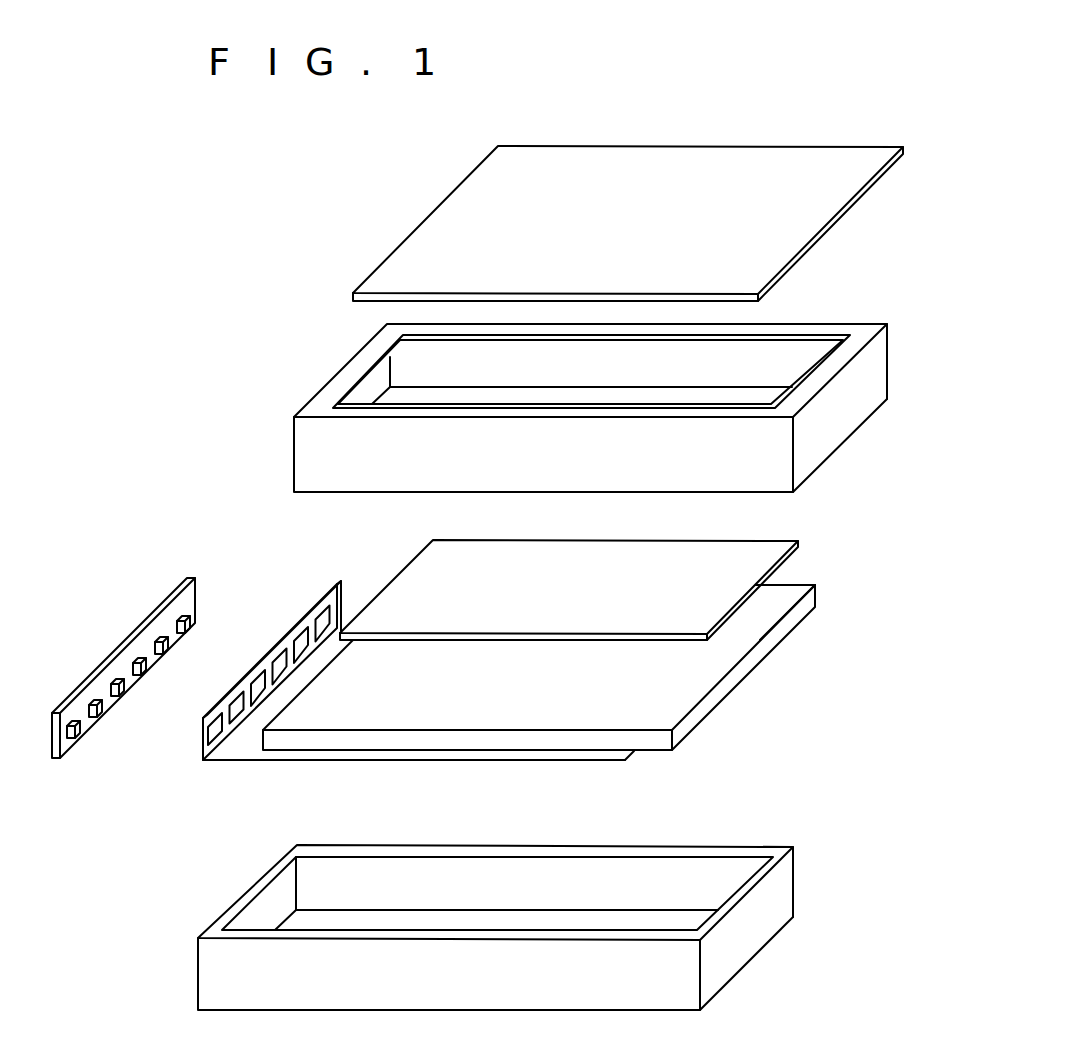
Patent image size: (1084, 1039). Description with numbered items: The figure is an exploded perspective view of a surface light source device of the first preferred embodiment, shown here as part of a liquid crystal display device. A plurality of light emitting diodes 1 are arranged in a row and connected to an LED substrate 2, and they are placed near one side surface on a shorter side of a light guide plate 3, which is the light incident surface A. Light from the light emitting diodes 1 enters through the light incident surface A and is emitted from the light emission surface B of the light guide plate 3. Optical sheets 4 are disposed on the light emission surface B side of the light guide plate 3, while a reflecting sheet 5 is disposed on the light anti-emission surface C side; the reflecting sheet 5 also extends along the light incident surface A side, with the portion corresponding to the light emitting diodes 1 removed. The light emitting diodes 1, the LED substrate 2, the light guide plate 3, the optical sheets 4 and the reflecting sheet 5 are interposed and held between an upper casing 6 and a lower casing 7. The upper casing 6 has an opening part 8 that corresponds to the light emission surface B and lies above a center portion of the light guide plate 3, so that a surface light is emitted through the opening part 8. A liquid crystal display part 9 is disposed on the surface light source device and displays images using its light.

The light emitting diodes 1 is at (87, 727).
The LED substrate 2 is at (142, 627).
The light guide plate 3 is at (555, 667).
The optical sheets 4 is at (768, 552).
The reflecting sheet 5 is at (538, 767).
The upper casing 6 is at (847, 350).
The lower casing 7 is at (738, 937).
The opening part 8 is at (810, 330).
The liquid crystal display part 9 is at (787, 228).
The light incident surface A is at (262, 737).
The light emission surface B is at (748, 628).
The light anti-emission surface C is at (742, 683).